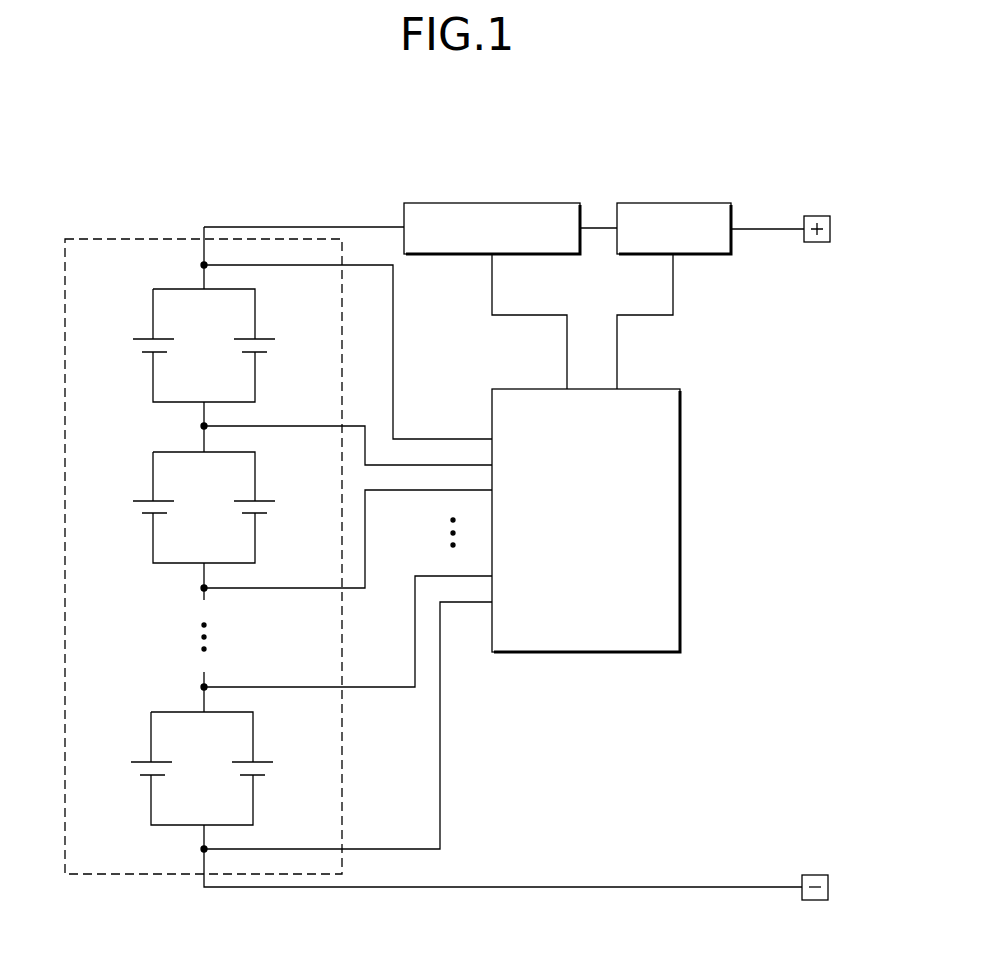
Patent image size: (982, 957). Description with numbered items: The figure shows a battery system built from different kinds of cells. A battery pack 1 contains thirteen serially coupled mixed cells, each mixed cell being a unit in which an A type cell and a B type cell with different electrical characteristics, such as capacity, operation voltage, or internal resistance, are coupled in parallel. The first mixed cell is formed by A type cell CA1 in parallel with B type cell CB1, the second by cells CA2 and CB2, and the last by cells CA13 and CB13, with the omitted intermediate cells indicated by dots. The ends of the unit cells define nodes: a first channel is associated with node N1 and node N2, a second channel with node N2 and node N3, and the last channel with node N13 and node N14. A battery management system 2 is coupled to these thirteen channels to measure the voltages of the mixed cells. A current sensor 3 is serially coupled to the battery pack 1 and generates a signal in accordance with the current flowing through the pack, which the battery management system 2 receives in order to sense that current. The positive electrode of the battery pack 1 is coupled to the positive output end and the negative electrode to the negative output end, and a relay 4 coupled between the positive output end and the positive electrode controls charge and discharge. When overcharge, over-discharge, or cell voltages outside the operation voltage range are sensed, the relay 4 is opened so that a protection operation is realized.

The battery pack 1 is at (122, 239).
The battery management system 2 is at (680, 447).
The current sensor 3 is at (493, 203).
The relay 4 is at (675, 203).
The A type cell CA1 is at (169, 345).
The B type cell CB1 is at (279, 346).
The A type cell CA2 is at (169, 507).
The B type cell CB2 is at (279, 508).
The A type cell CA13 is at (162, 768).
The B type cell CB13 is at (282, 769).
The node N1 is at (327, 346).
The node N2 is at (327, 440).
The node N3 is at (327, 545).
The node N13 is at (323, 638).
The node N14 is at (323, 732).